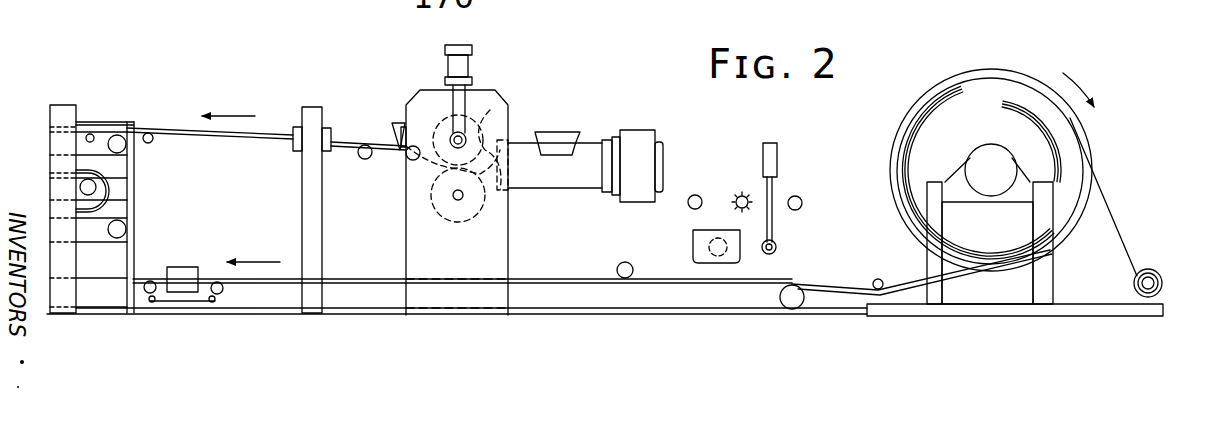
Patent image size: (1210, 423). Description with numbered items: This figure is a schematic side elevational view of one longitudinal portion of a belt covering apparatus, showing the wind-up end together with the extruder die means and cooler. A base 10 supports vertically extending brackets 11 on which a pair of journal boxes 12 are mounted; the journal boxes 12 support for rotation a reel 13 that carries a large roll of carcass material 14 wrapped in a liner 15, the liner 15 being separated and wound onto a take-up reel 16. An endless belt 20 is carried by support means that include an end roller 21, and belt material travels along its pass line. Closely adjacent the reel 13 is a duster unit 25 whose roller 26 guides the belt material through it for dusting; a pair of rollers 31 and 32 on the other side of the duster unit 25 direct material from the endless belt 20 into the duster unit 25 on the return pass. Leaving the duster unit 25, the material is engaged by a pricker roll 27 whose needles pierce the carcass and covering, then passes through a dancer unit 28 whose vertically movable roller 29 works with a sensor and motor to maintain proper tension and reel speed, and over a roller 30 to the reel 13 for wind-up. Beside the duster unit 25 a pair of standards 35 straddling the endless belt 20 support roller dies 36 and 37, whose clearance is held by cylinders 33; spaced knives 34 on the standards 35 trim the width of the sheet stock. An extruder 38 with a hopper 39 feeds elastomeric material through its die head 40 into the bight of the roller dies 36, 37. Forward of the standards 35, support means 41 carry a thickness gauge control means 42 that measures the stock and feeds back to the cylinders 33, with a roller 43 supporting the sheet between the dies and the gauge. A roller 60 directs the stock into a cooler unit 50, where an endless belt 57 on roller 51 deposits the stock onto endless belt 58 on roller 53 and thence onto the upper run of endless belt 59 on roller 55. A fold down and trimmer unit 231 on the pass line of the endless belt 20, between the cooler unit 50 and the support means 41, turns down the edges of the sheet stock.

The base 10 is at (1085, 318).
The brackets 11 is at (1033, 292).
The journal boxes 12 is at (967, 193).
The reel 13 is at (990, 90).
The carcass material 14 is at (912, 281).
The liner 15 is at (1113, 212).
The take-up reel 16 is at (1146, 272).
The endless belt 20 is at (717, 316).
The end roller 21 is at (798, 304).
The duster unit 25 is at (693, 240).
The roller 26 is at (708, 249).
The pricker roll 27 is at (743, 193).
The dancer unit 28 is at (785, 159).
The roller 29 is at (777, 246).
The roller 30 is at (803, 200).
The roller 31 is at (692, 195).
The roller 32 is at (616, 266).
The cylinders 33 is at (468, 66).
The knives 34 is at (396, 122).
The standards 35 is at (503, 236).
The roller die 36 is at (480, 110).
The roller die 37 is at (443, 216).
The extruder 38 is at (597, 128).
The hopper 39 is at (571, 132).
The die head 40 is at (497, 112).
The support means 41 is at (312, 218).
The thickness gauge control means 42 is at (297, 128).
The roller 43 is at (374, 155).
The cooler unit 50 is at (66, 100).
The roller 51 is at (121, 151).
The roller 53 is at (91, 192).
The roller 55 is at (119, 238).
The endless belt 57 is at (94, 138).
The endless belt 58 is at (100, 183).
The endless belt 59 is at (130, 216).
The roller 60 is at (155, 139).
The fold down and trimmer unit 231 is at (183, 283).